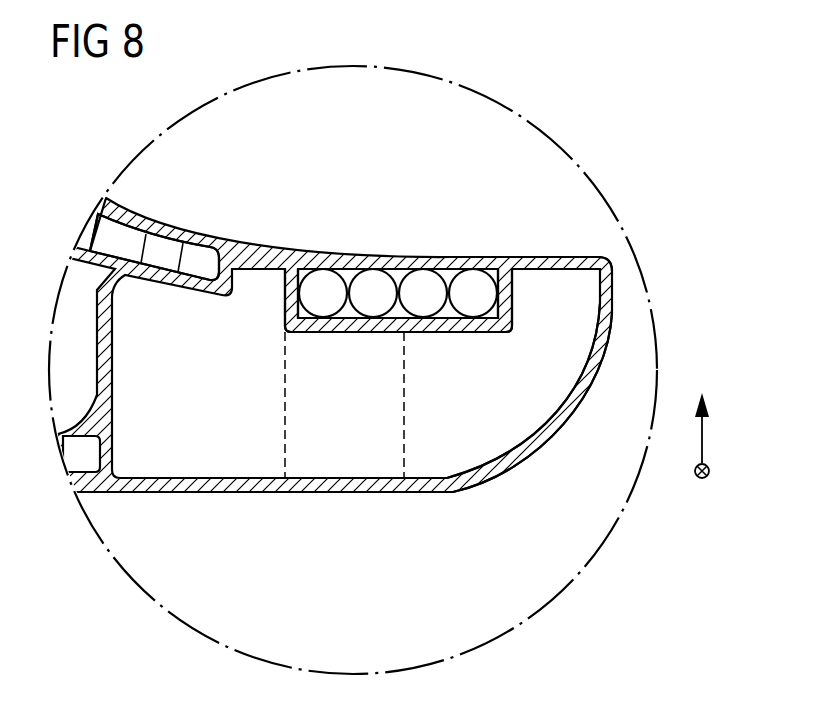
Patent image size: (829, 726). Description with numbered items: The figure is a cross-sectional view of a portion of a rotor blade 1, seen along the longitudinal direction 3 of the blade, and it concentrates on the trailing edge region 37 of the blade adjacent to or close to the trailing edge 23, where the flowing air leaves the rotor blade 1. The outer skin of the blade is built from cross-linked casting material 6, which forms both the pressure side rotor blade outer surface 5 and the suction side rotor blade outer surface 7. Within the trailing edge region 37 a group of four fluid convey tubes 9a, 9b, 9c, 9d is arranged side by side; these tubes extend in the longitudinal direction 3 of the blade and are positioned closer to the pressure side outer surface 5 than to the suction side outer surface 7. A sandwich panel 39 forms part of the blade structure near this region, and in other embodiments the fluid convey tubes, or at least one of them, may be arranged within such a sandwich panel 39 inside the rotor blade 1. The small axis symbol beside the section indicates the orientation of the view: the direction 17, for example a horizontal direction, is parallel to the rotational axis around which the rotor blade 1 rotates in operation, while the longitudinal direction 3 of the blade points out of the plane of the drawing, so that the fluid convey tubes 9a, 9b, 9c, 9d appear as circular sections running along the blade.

The rotor blade 1 is at (650, 210).
The longitudinal direction 3 is at (710, 471).
The pressure side rotor blade outer surface 5 is at (228, 238).
The cross-linked casting material 6 is at (559, 262).
The suction side rotor blade outer surface 7 is at (432, 494).
The fluid convey tube 9a is at (325, 272).
The fluid convey tube 9b is at (375, 272).
The fluid convey tube 9c is at (425, 272).
The fluid convey tube 9d is at (475, 272).
The direction 17 is at (703, 428).
The trailing edge 23 is at (613, 258).
The trailing edge region 37 is at (577, 178).
The sandwich panel 39 is at (188, 199).